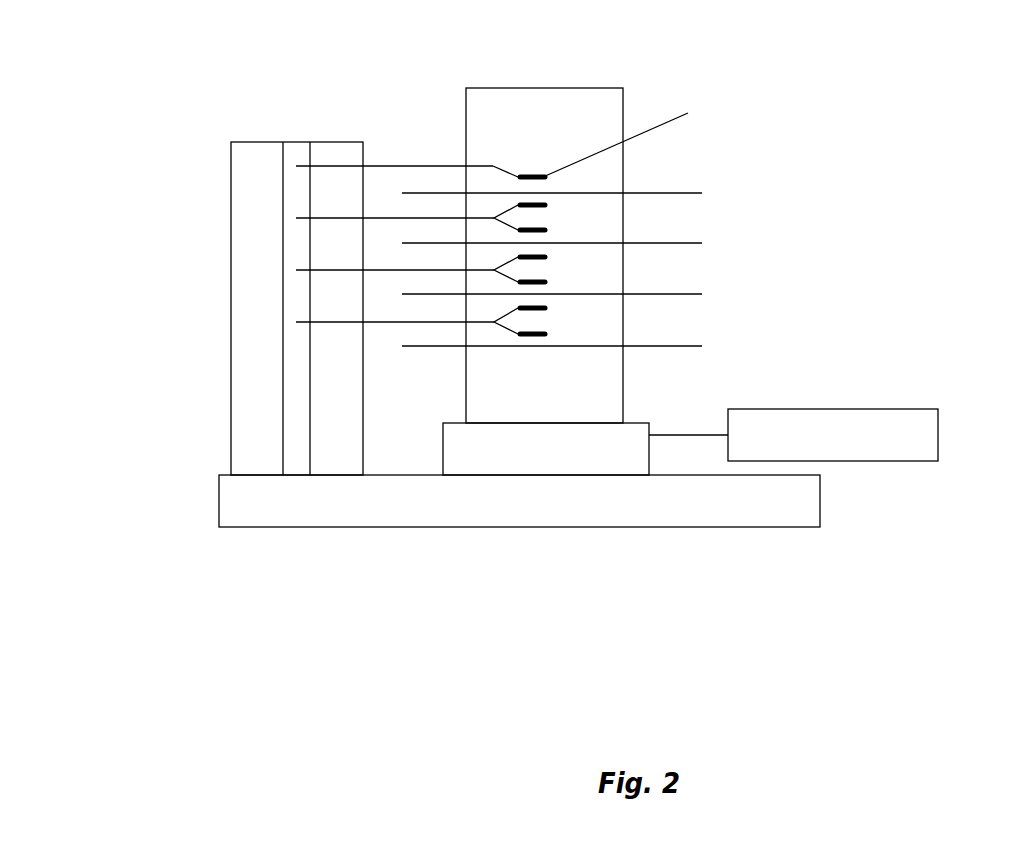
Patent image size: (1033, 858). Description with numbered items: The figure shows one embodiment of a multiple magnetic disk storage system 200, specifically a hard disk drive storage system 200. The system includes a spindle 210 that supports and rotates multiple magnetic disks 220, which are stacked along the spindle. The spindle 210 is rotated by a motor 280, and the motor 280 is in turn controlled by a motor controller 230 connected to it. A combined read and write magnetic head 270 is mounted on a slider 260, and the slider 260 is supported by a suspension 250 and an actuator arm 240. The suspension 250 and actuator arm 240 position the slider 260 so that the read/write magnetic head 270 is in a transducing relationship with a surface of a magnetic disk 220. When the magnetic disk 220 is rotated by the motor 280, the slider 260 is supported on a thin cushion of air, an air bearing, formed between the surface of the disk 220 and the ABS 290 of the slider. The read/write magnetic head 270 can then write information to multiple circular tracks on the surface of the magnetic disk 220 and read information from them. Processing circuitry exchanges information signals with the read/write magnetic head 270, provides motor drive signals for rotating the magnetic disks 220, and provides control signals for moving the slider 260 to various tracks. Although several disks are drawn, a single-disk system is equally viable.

The hard disk drive storage system 200 is at (100, 608).
The spindle 210 is at (610, 88).
The magnetic disks 220 is at (663, 193).
The motor controller 230 is at (862, 408).
The actuator arm 240 is at (415, 165).
The suspension 250 is at (507, 165).
The slider 260 is at (548, 176).
The read/write magnetic head 270 is at (545, 334).
The motor 280 is at (638, 422).
The ABS 290 is at (632, 133).